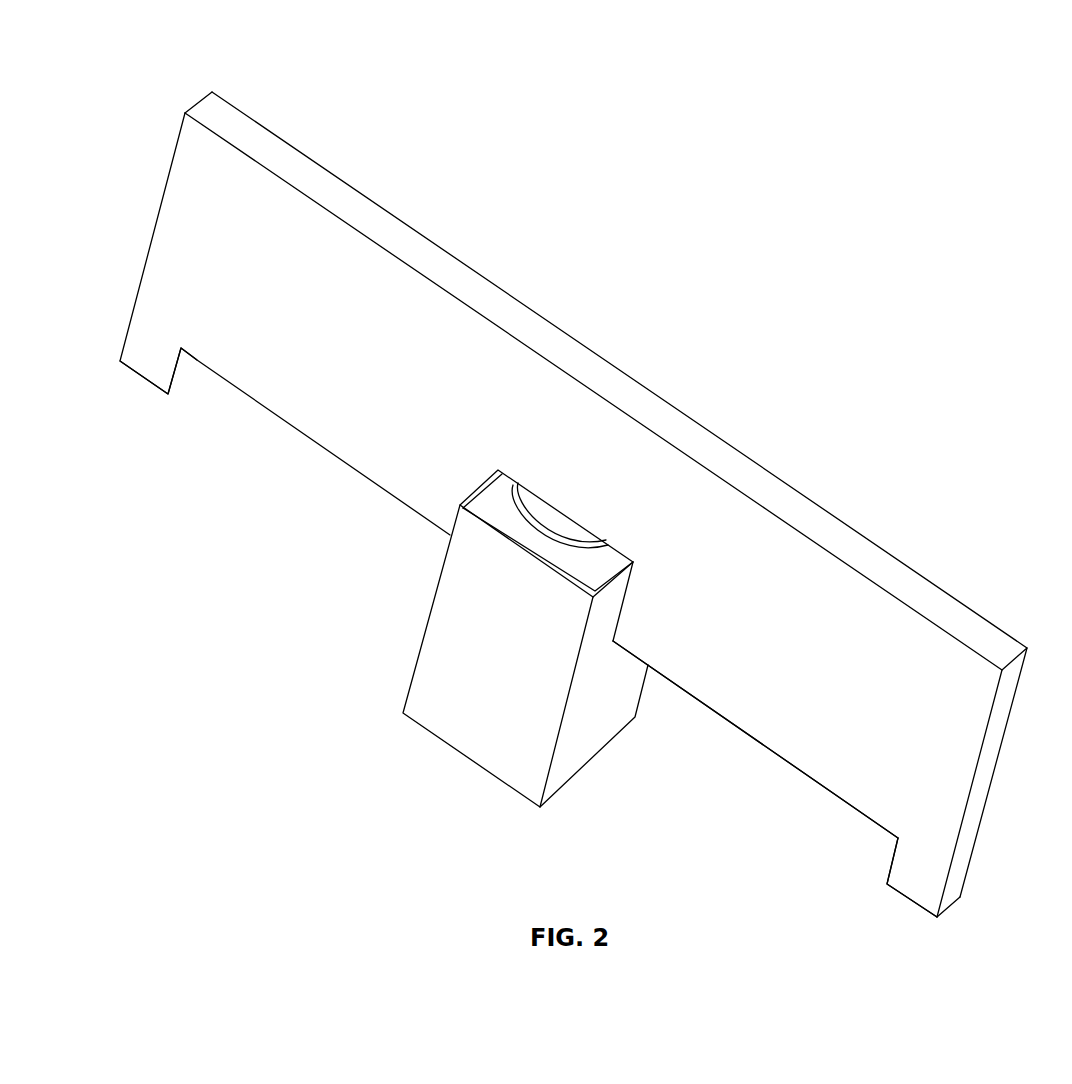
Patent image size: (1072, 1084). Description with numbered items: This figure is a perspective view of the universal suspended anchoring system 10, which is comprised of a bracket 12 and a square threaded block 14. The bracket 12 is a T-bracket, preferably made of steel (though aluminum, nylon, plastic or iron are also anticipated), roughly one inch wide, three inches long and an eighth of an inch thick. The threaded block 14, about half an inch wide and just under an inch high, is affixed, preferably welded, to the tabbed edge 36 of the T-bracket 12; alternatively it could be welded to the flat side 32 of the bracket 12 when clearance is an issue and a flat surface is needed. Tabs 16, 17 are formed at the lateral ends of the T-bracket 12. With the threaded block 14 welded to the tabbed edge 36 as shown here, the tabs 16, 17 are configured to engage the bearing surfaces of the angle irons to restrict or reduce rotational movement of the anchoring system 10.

The universal suspended anchoring system 10 is at (108, 141).
The bracket 12 is at (170, 245).
The square threaded block 14 is at (413, 667).
The tab 16 is at (187, 366).
The tab 17 is at (889, 867).
The flat side 32 is at (822, 520).
The tabbed edge 36 is at (740, 731).